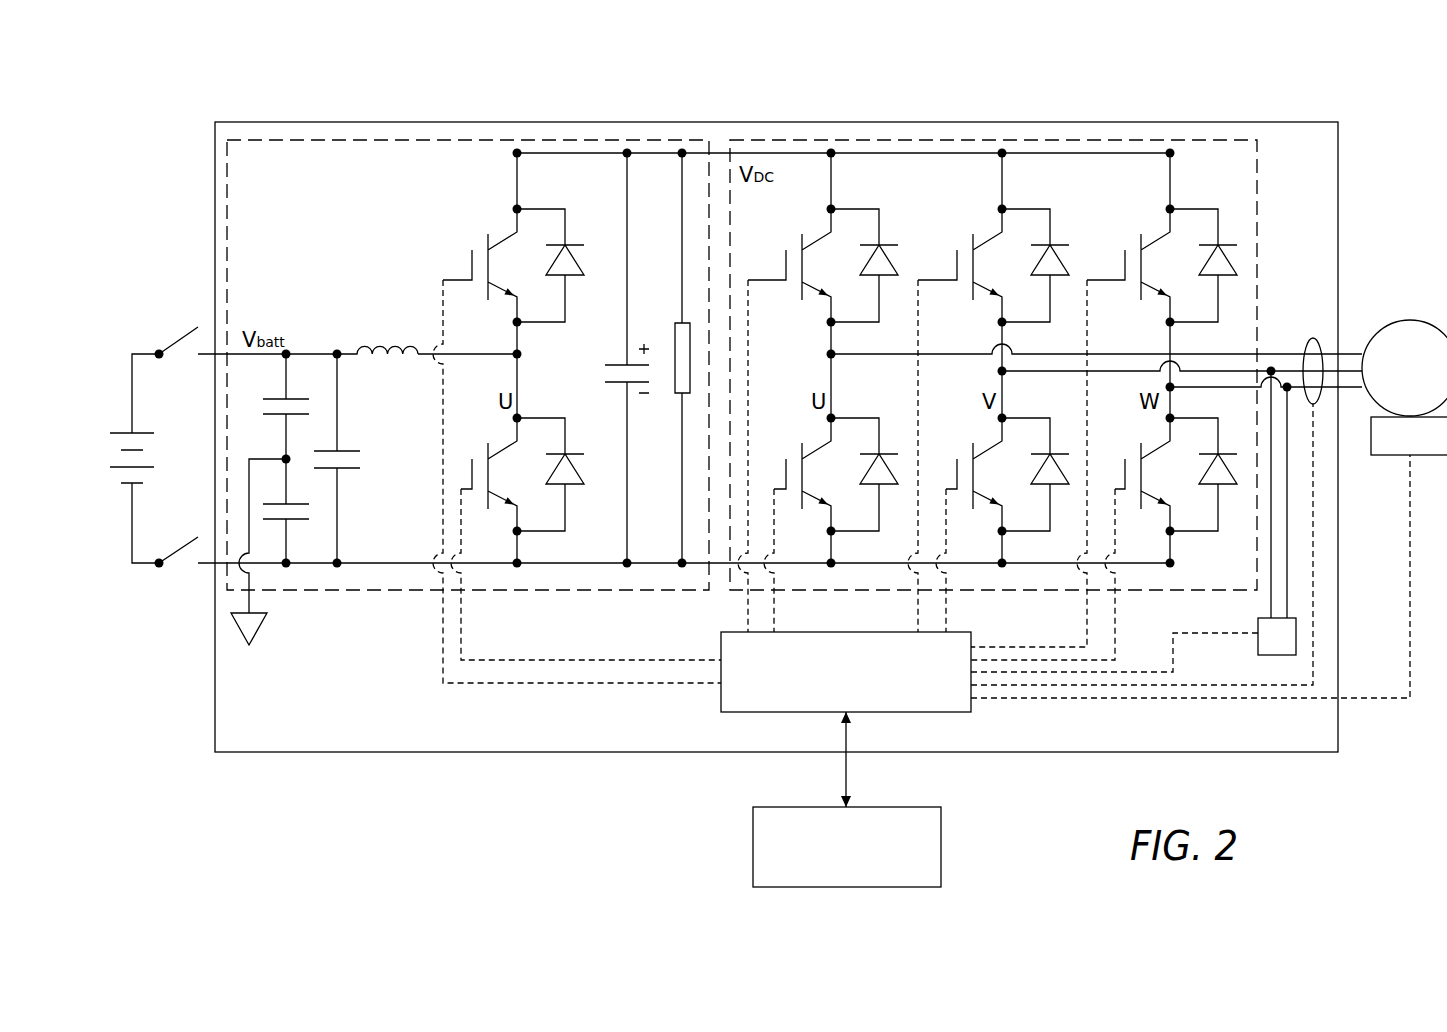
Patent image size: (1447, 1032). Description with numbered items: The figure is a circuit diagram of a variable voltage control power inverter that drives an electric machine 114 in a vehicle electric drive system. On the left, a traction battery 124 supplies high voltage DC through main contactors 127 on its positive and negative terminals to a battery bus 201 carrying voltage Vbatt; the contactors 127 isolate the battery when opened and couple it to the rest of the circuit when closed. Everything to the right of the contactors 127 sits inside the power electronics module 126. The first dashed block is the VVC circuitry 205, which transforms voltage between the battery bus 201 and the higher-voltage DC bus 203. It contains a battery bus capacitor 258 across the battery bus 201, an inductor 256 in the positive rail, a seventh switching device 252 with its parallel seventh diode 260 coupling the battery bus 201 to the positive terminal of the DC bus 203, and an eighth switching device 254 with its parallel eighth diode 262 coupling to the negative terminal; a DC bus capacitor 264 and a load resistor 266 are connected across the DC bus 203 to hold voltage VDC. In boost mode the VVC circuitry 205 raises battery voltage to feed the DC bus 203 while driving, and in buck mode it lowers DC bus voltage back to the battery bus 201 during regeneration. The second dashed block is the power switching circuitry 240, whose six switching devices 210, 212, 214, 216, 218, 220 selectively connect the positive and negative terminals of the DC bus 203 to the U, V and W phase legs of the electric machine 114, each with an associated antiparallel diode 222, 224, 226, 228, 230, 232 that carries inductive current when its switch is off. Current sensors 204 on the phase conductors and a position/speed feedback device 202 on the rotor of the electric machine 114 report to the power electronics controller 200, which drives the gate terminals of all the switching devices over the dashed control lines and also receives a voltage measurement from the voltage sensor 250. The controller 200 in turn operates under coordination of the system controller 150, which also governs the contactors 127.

The electric machine 114 is at (1410, 320).
The traction battery 124 is at (120, 432).
The power electronics module 126 is at (803, 122).
The main contactors 127 is at (178, 340).
The system controller 150 is at (753, 828).
The power electronics controller 200 is at (721, 642).
The battery bus 201 is at (306, 352).
The position/speed feedback device 202 is at (1385, 455).
The DC bus 203 is at (718, 153).
The current sensor 204 is at (1313, 337).
The VVC circuitry 205 is at (322, 140).
The switching device 210 is at (801, 243).
The switching device 212 is at (801, 455).
The switching device 214 is at (972, 243).
The switching device 216 is at (972, 455).
The switching device 218 is at (1140, 243).
The switching device 220 is at (1140, 455).
The diode 222 is at (897, 243).
The diode 224 is at (892, 453).
The diode 226 is at (1066, 243).
The diode 228 is at (1066, 453).
The diode 230 is at (1232, 243).
The diode 232 is at (1232, 453).
The power switching circuitry 240 is at (1197, 140).
The voltage sensor 250 is at (1296, 628).
The seventh switching device 252 is at (487, 242).
The eighth switching device 254 is at (487, 452).
The inductor 256 is at (392, 360).
The battery bus capacitor 258 is at (345, 470).
The seventh diode 260 is at (582, 243).
The eighth diode 262 is at (580, 453).
The DC bus capacitor 264 is at (625, 362).
The load resistor 266 is at (680, 320).